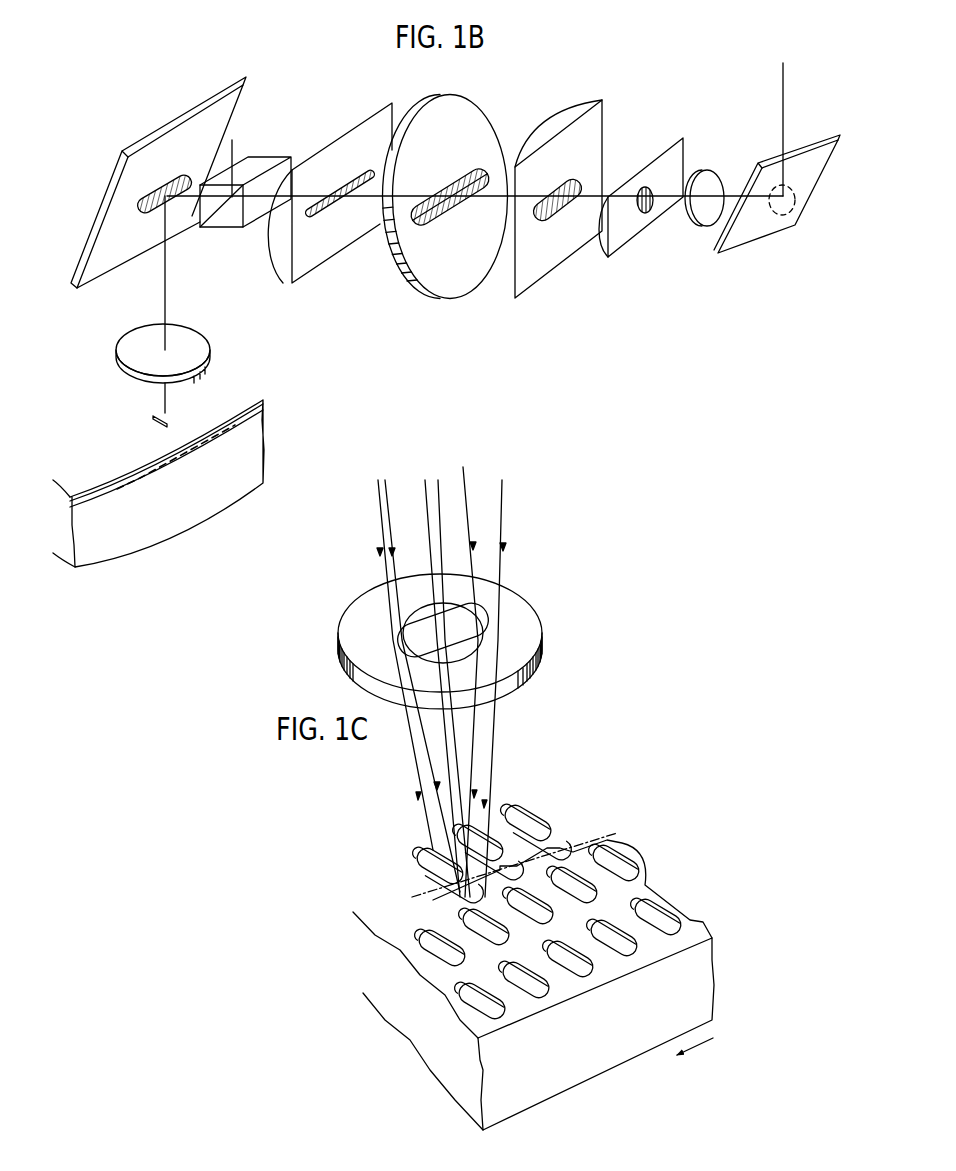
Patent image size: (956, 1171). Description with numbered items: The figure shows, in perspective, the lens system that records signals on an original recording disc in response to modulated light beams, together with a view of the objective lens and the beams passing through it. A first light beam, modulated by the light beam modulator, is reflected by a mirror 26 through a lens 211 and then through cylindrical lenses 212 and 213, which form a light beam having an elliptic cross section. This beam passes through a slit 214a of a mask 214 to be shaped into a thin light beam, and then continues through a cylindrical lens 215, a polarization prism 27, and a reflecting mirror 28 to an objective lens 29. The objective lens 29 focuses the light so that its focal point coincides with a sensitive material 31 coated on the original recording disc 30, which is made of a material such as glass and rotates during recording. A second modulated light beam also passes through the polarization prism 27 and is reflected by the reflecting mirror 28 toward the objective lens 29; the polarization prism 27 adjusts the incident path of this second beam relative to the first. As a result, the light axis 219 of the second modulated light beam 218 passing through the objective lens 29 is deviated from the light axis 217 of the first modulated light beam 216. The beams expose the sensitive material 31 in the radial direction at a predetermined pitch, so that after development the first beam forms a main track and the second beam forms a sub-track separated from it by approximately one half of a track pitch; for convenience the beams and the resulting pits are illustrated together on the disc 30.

In FIG. 1B, the mirror 26 is at (765, 232).
In FIG. 1B, the polarization prism 27 is at (267, 158).
In FIG. 1B, the reflecting mirror 28 is at (158, 137).
In FIG. 1B, the objective lens 29 is at (203, 347).
In FIG. 1C, the objective lens 29 is at (541, 633).
In FIG. 1B, the original recording disc 30 is at (187, 465).
In FIG. 1C, the original recording disc 30 is at (630, 1053).
In FIG. 1B, the sensitive material 31 is at (243, 398).
In FIG. 1B, the lens 211 is at (712, 172).
In FIG. 1B, the cylindrical lens 212 is at (637, 230).
In FIG. 1B, the cylindrical lens 213 is at (552, 260).
In FIG. 1B, the mask 214 is at (465, 210).
In FIG. 1B, the slit 214a is at (490, 168).
In FIG. 1B, the cylindrical lens 215 is at (322, 257).
In FIG. 1C, the first modulated light beam 216 is at (505, 523).
In FIG. 1C, the light axis 217 is at (442, 487).
In FIG. 1C, the second modulated light beam 218 is at (389, 525).
In FIG. 1C, the light axis 219 is at (426, 486).